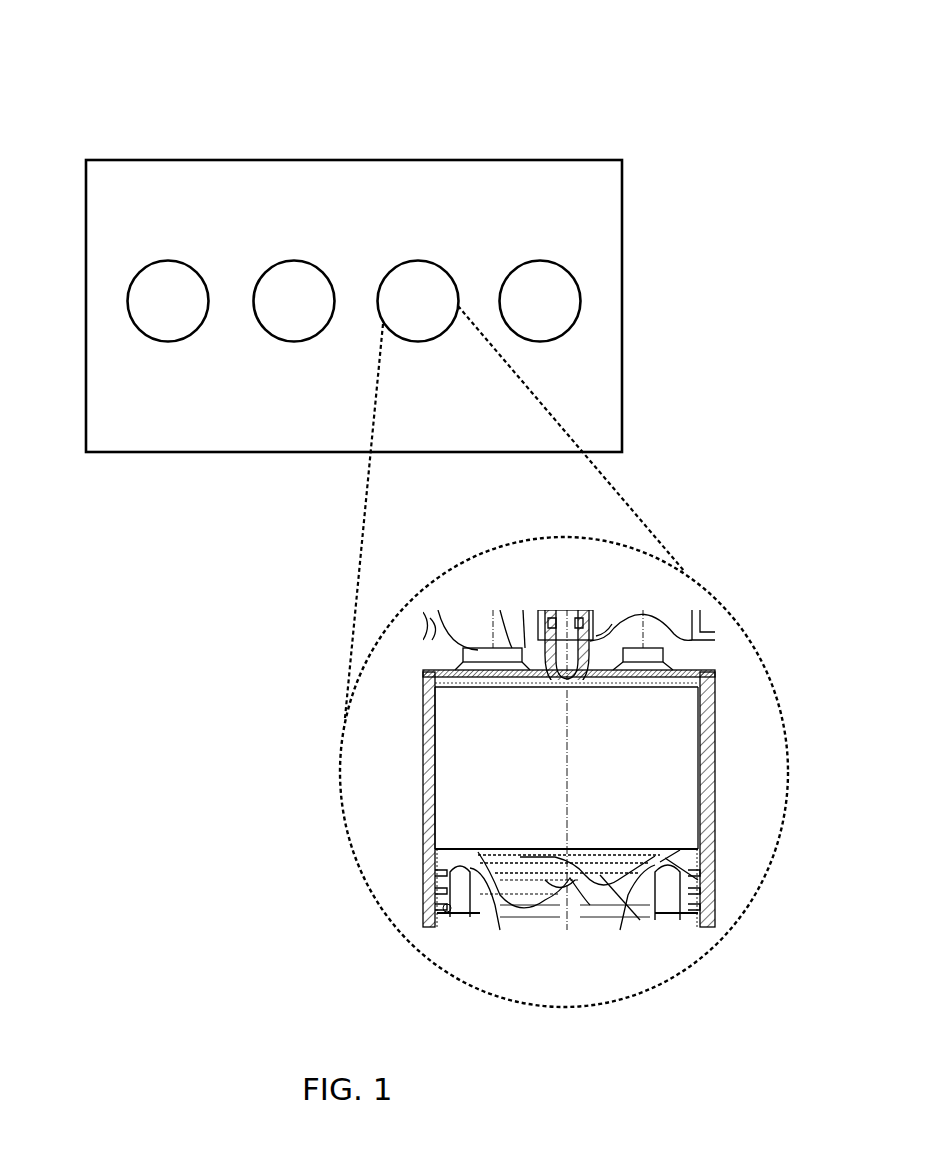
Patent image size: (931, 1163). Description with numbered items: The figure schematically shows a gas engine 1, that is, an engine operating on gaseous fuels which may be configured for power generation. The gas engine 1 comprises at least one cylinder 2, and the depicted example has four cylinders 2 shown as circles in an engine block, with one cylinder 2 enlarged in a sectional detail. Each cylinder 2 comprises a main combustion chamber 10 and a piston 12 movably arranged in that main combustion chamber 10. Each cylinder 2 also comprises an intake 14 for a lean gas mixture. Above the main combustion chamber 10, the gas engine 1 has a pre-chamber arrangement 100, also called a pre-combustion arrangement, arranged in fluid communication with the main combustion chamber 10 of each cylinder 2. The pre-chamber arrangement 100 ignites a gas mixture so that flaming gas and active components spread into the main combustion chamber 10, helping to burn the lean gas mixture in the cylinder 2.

The gas engine 1 is at (443, 108).
The cylinder 2 is at (146, 267).
The pre-chamber arrangement 100 is at (594, 596).
The intake 14 is at (493, 672).
The main combustion chamber 10 is at (584, 780).
The piston 12 is at (458, 848).